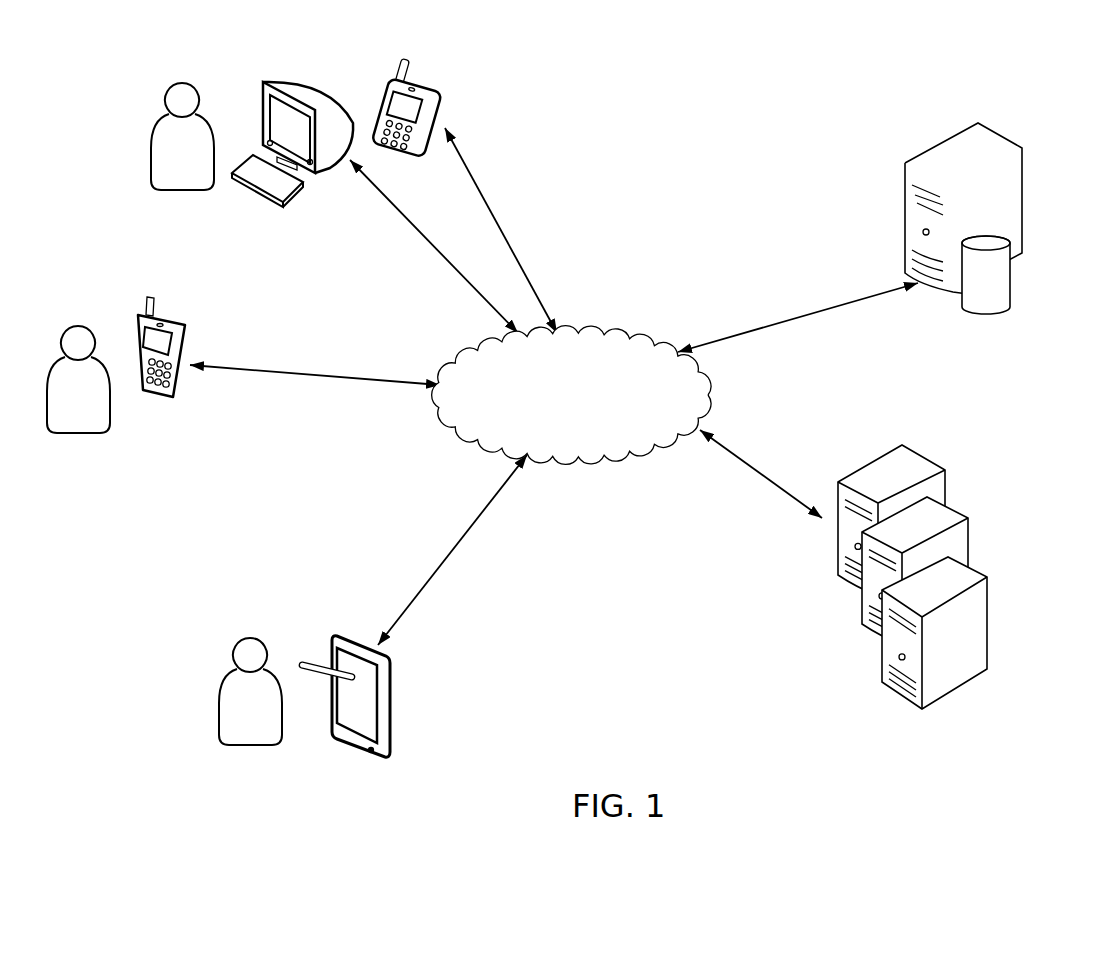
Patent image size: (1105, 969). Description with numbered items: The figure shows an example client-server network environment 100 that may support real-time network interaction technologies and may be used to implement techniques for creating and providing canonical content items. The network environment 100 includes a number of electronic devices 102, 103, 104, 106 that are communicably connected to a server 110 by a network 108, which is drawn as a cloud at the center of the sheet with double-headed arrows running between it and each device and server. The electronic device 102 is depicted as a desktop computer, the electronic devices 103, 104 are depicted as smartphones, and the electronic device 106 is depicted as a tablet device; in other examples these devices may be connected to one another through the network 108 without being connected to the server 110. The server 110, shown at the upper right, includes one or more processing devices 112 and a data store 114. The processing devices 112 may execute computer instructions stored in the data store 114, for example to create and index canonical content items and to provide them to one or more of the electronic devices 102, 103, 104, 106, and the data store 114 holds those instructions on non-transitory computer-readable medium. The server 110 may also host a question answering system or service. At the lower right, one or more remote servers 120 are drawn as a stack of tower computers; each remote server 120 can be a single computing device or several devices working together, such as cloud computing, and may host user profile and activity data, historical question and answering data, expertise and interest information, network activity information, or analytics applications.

The network environment 100 is at (650, 118).
The electronic device 102 is at (286, 82).
The electronic device 103 is at (423, 85).
The electronic device 104 is at (173, 323).
The electronic device 106 is at (340, 632).
The network 108 is at (572, 332).
The server 110 is at (916, 304).
The processing devices 112 is at (998, 133).
The data store 114 is at (1010, 290).
The remote servers 120 is at (818, 601).